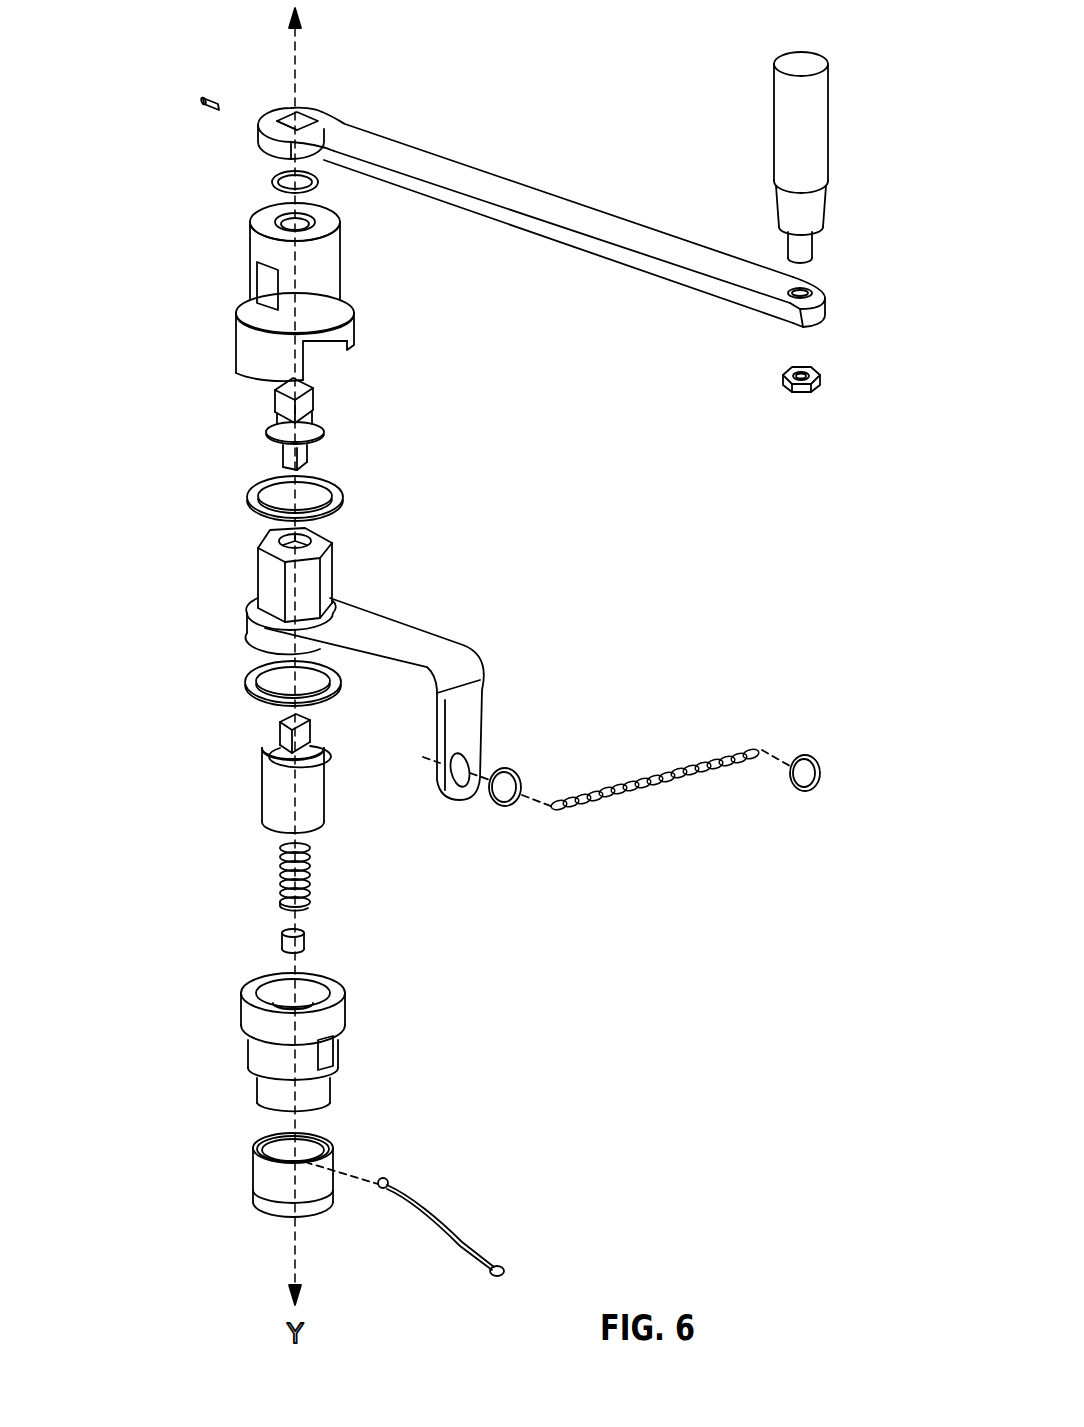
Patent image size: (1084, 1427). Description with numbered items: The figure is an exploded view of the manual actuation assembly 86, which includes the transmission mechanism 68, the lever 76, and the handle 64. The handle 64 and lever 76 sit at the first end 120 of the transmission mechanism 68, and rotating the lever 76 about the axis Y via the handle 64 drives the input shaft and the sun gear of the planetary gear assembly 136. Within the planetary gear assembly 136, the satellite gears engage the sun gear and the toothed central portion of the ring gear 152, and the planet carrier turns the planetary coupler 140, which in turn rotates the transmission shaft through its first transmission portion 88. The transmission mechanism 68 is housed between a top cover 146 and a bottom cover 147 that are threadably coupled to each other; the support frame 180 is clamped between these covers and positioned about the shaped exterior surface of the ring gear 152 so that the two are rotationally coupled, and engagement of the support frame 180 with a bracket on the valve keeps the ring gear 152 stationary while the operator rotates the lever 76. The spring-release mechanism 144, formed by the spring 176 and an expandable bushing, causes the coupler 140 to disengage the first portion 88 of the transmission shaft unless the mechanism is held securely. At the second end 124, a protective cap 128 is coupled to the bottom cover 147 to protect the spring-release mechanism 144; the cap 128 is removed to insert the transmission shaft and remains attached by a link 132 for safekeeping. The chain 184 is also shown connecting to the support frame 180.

The handle 64 is at (773, 118).
The transmission mechanism 68 is at (115, 360).
The lever 76 is at (467, 172).
The manual actuation assembly 86 is at (881, 91).
The first transmission portion 88 is at (308, 400).
The first end 120 is at (257, 219).
The second end 124 is at (260, 1090).
The protective cap 128 is at (316, 1212).
The link 132 is at (450, 1220).
The planetary gear assembly 136 is at (228, 563).
The planetary coupler 140 is at (270, 776).
The spring-release mechanism 144 is at (243, 879).
The top cover 146 is at (245, 338).
The bottom cover 147 is at (252, 1044).
The ring gear 152 is at (328, 568).
The spring 176 is at (310, 884).
The support frame 180 is at (396, 622).
The chain 184 is at (657, 792).